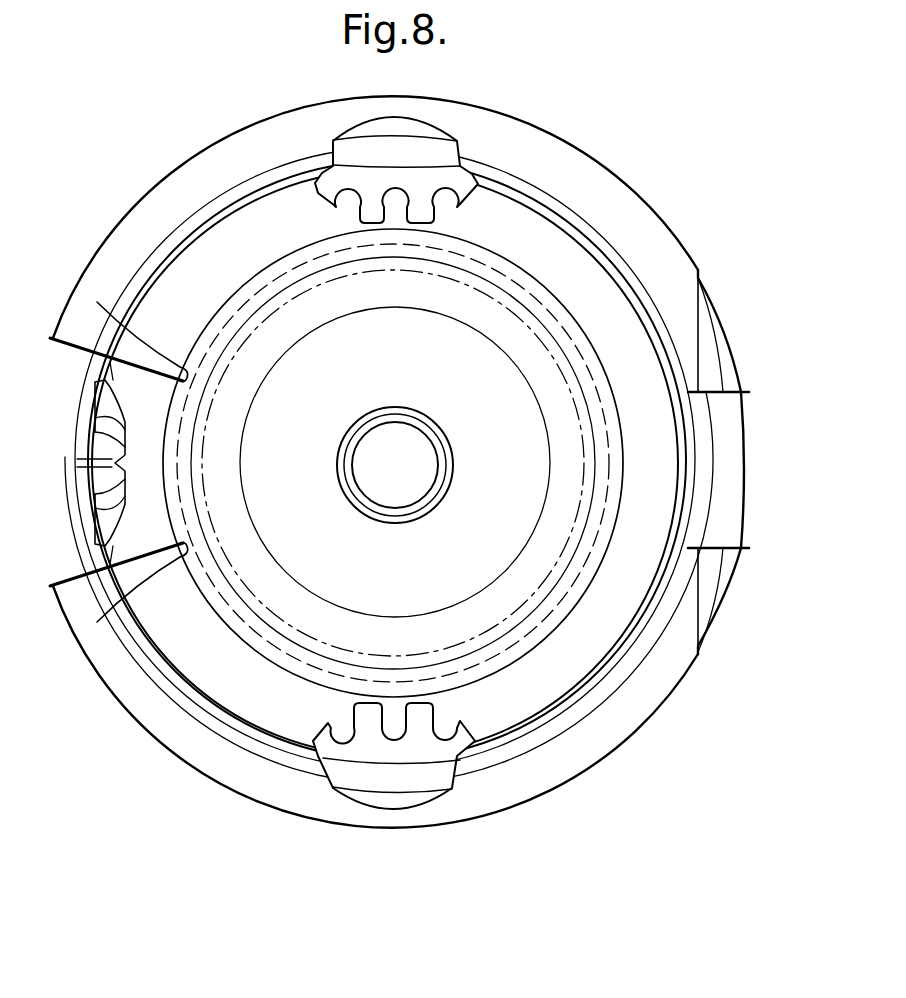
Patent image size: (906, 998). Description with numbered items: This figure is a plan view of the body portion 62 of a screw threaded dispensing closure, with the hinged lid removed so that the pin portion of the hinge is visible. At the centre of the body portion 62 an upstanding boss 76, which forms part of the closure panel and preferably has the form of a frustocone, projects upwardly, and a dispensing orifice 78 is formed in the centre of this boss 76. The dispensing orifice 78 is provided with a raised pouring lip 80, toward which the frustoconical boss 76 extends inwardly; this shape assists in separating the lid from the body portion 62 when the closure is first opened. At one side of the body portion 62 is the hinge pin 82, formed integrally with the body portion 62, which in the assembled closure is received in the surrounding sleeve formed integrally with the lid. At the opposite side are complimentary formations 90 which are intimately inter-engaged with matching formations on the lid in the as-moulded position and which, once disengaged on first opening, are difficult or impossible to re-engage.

The body portion 62 is at (638, 702).
The boss 76 is at (503, 378).
The dispensing orifice 78 is at (396, 447).
The pouring lip 80 is at (350, 437).
The hinge pin 82 is at (735, 452).
The complimentary formations 90 is at (107, 510).